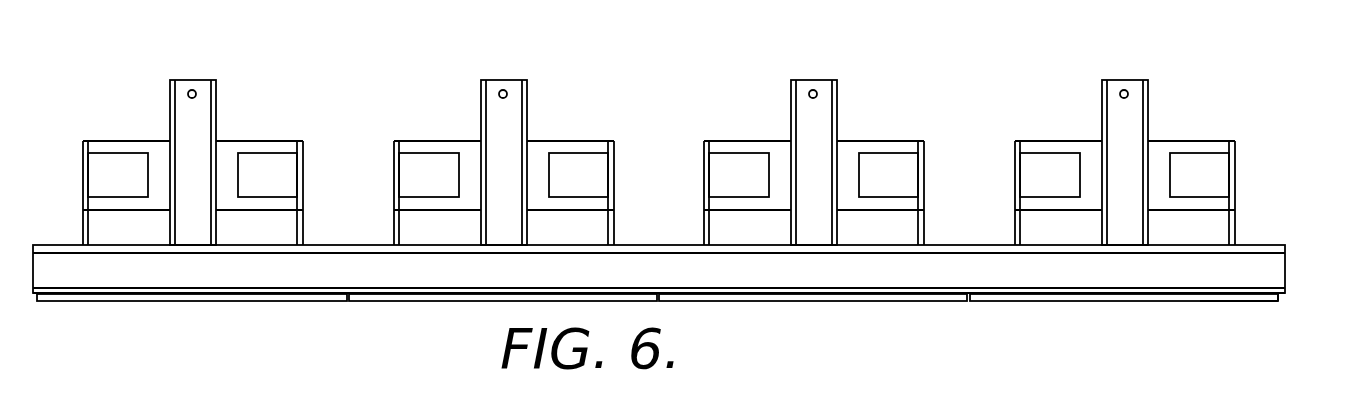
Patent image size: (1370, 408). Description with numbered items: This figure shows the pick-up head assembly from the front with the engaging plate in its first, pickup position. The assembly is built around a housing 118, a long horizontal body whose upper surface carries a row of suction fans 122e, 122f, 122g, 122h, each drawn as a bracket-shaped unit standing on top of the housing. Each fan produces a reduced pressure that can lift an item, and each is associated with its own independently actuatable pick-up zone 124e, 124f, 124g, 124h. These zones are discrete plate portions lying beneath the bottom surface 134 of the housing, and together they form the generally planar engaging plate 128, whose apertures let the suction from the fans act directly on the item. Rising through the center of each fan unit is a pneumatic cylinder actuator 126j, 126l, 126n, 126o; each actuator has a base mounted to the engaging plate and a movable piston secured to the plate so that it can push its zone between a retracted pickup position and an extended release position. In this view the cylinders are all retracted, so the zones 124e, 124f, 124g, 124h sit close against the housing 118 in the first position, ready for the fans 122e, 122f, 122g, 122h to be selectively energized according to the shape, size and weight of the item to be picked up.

The housing 118 is at (1292, 262).
The bottom surface of the housing 134 is at (1294, 296).
The engaging plate 128 is at (1275, 310).
The pick-up zone 124e is at (147, 310).
The pick-up zone 124f is at (458, 310).
The pick-up zone 124g is at (768, 310).
The pick-up zone 124h is at (1079, 310).
The suction fan 122e is at (258, 134).
The suction fan 122f is at (569, 134).
The suction fan 122g is at (879, 134).
The suction fan 122h is at (1190, 134).
The actuator 126j is at (197, 74).
The actuator 126l is at (508, 74).
The actuator 126n is at (818, 74).
The actuator 126o is at (1129, 74).